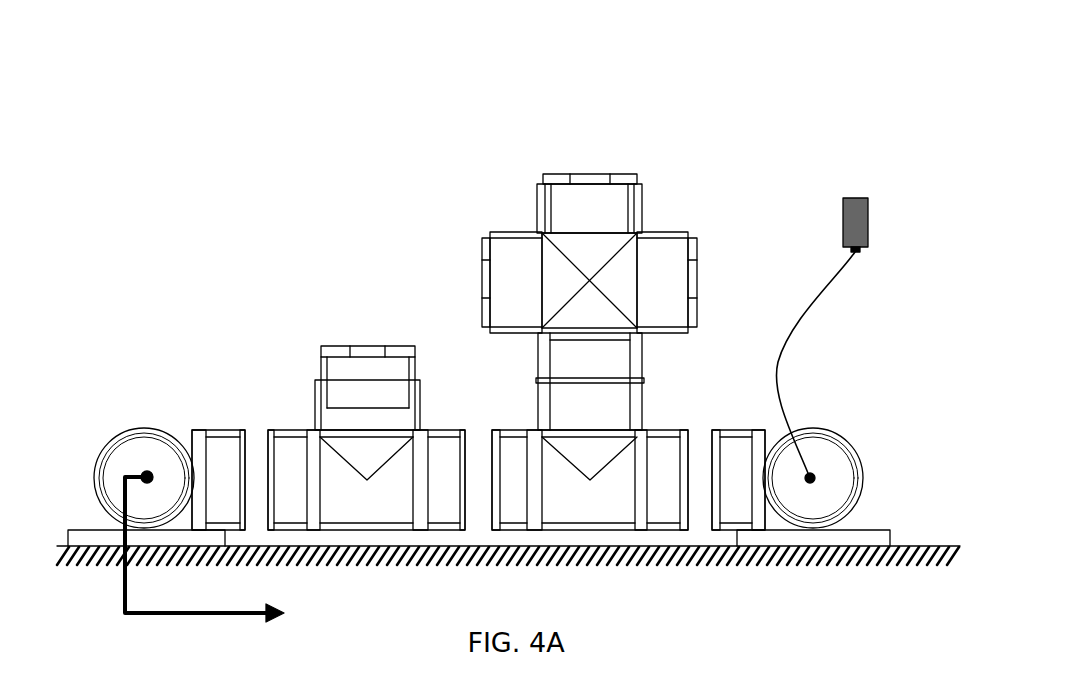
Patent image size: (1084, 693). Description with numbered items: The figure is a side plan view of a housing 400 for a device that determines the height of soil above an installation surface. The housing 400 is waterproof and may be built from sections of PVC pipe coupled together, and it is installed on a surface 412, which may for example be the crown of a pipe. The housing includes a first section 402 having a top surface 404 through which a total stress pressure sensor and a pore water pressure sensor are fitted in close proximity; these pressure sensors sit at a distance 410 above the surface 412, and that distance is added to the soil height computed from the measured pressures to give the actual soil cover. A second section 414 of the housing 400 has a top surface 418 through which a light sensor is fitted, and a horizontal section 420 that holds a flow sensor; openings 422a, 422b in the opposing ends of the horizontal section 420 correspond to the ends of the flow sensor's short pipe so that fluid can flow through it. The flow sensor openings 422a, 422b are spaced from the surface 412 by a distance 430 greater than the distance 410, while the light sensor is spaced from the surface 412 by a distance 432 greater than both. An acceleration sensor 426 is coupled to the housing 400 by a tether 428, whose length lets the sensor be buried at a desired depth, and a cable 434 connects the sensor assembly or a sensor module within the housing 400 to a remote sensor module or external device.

The housing 400 is at (119, 452).
The first section 402 is at (403, 397).
The top surface 404 is at (328, 346).
The distance 410 is at (310, 546).
The surface 412 is at (924, 553).
The second section 414 is at (624, 363).
The top surface 418 is at (557, 178).
The horizontal section 420 is at (549, 268).
The opening 422a is at (482, 275).
The opening 422b is at (697, 276).
The acceleration sensor 426 is at (843, 212).
The tether 428 is at (823, 291).
The distance 430 is at (240, 257).
The distance 432 is at (172, 174).
The cable 434 is at (180, 618).